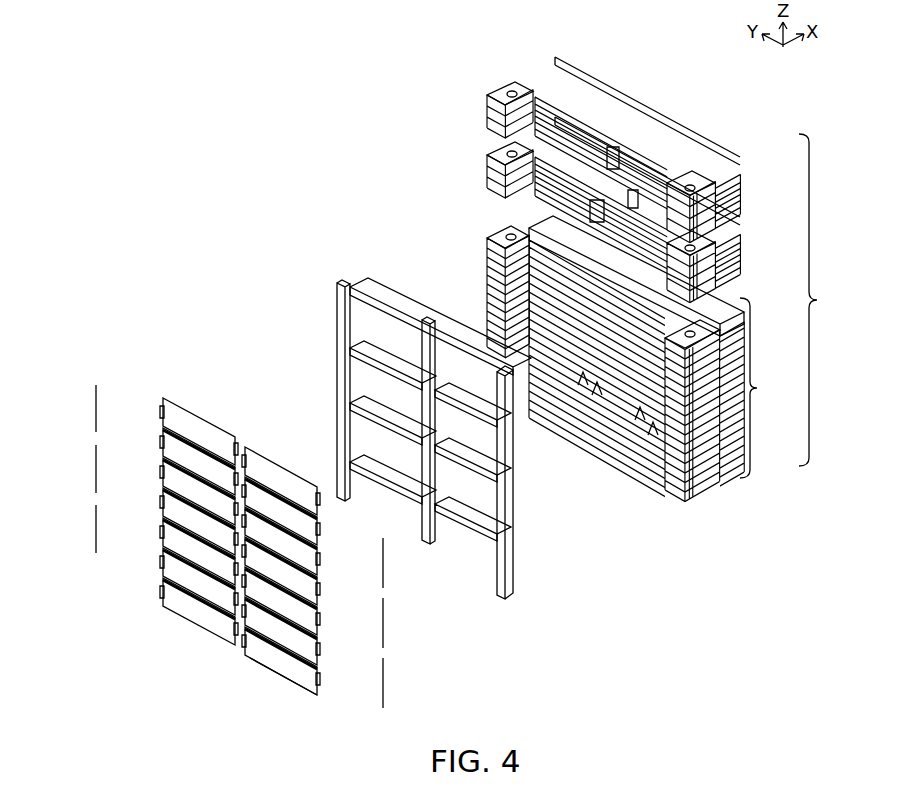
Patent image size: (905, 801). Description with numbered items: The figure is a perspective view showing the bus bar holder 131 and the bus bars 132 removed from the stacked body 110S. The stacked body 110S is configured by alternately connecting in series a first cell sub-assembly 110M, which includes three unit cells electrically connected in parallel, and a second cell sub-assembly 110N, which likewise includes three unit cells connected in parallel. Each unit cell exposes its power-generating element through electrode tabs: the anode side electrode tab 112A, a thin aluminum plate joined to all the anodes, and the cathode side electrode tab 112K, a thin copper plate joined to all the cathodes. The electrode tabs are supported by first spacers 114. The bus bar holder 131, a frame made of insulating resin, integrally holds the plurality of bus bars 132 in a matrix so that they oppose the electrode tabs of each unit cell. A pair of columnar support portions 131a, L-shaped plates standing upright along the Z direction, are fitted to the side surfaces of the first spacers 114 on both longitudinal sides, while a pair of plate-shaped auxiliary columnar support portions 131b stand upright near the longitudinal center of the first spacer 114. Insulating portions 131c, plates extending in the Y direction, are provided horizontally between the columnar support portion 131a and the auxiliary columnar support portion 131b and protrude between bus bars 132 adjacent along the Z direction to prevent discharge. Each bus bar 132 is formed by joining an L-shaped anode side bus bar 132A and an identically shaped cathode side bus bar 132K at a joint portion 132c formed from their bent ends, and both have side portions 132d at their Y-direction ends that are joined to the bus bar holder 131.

The stacked body 110S is at (798, 288).
The first cell sub-assembly 110M is at (749, 173).
The second cell sub-assembly 110N is at (749, 232).
The cathode side electrode tab 112K is at (560, 123).
The anode side electrode tab 112A is at (562, 136).
The first spacer 114 is at (705, 484).
The bus bar holder 131 is at (396, 423).
The columnar support portion 131a is at (435, 415).
The auxiliary columnar support portion 131b is at (505, 462).
The insulating portion 131c is at (450, 415).
The bus bar 132 is at (241, 543).
The cathode side bus bar 132K is at (163, 410).
The anode side bus bar 132A is at (163, 440).
The joint portion 132c is at (191, 440).
The side portion 132d is at (250, 640).